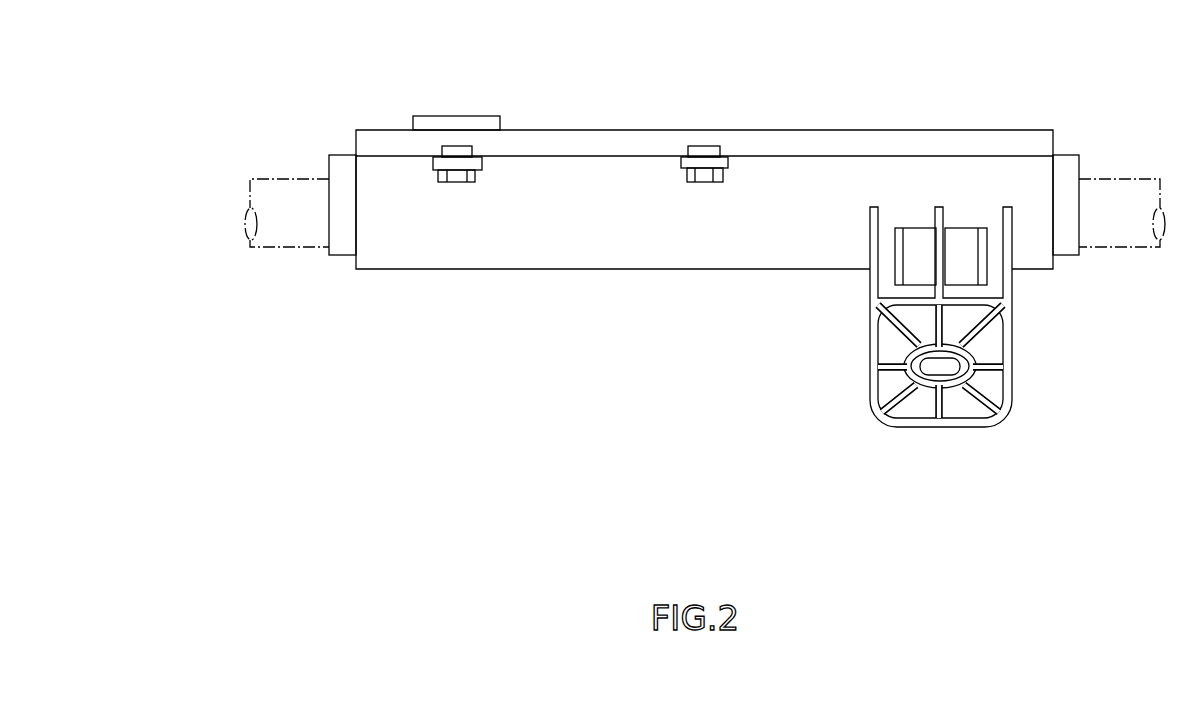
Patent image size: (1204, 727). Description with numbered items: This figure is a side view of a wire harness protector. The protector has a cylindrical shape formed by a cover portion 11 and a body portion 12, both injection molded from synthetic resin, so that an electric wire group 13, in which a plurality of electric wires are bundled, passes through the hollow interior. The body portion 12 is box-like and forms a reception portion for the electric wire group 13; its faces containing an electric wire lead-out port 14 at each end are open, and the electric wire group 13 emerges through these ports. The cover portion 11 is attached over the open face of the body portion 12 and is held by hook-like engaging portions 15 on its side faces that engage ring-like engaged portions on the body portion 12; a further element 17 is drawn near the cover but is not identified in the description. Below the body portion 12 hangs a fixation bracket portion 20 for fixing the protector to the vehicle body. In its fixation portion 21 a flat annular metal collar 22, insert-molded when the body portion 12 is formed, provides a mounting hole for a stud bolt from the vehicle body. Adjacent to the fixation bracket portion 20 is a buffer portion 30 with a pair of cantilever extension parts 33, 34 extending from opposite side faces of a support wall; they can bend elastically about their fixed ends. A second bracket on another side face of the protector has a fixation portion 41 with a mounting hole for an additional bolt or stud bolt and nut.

The cover portion 11 is at (648, 147).
The body portion 12 is at (602, 240).
The electric wire group 13 is at (278, 179).
The electric wire lead-out port 14 is at (343, 155).
The engaging portion 15 is at (460, 183).
The bolt 17 is at (460, 162).
The fixation bracket portion 20 is at (863, 413).
The fixation portion 21 is at (922, 367).
The collar 22 is at (962, 360).
The buffer portion 30 is at (1019, 287).
The extension part 33 is at (909, 228).
The extension part 34 is at (988, 228).
The fixation portion 41 is at (430, 116).